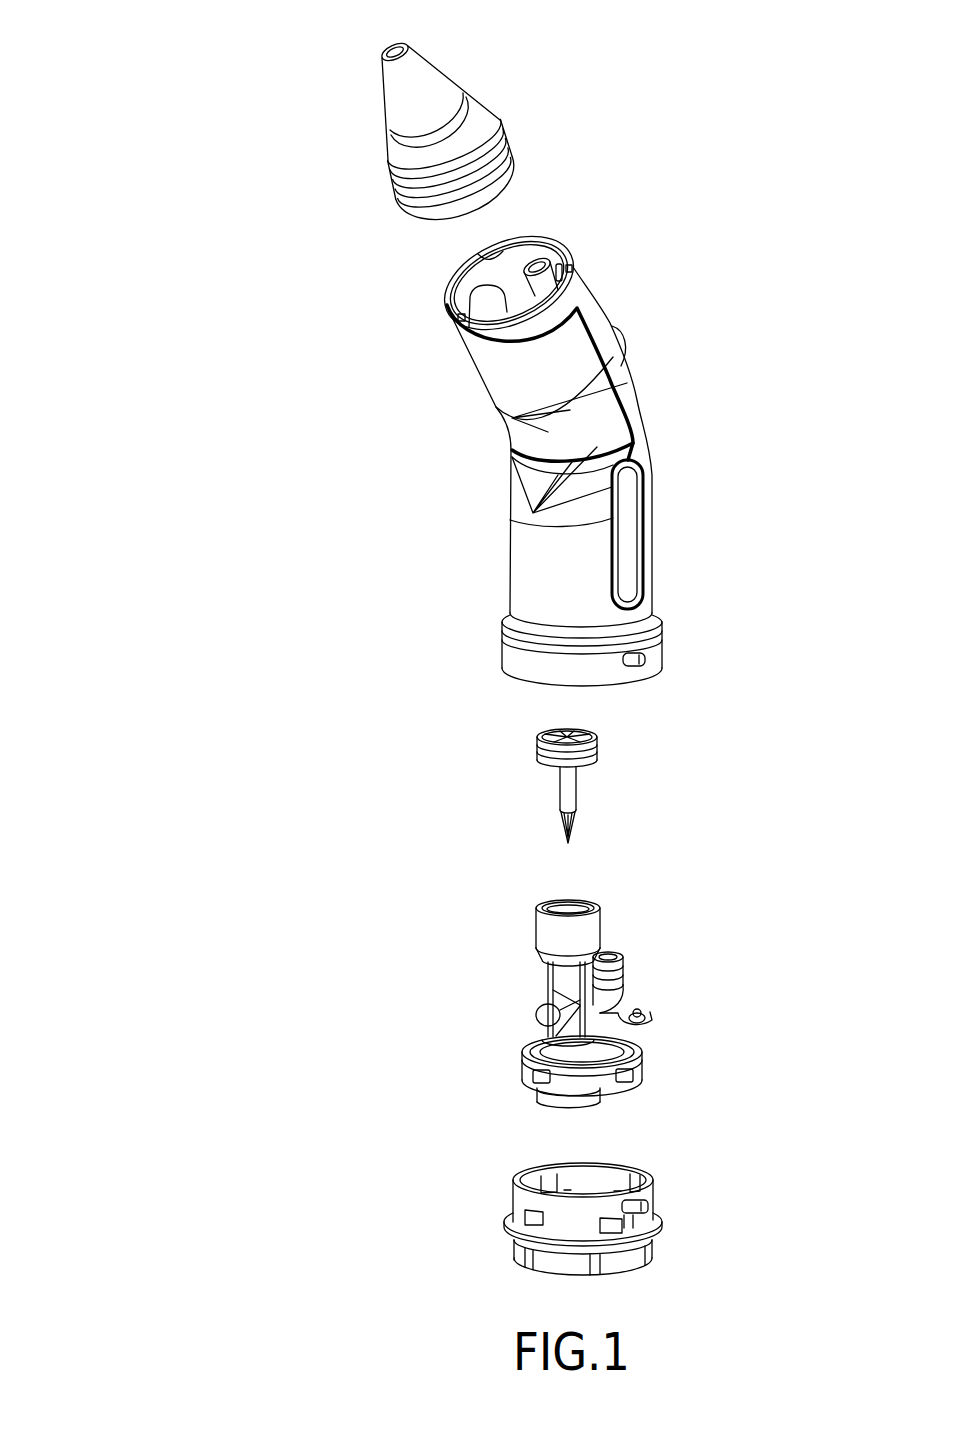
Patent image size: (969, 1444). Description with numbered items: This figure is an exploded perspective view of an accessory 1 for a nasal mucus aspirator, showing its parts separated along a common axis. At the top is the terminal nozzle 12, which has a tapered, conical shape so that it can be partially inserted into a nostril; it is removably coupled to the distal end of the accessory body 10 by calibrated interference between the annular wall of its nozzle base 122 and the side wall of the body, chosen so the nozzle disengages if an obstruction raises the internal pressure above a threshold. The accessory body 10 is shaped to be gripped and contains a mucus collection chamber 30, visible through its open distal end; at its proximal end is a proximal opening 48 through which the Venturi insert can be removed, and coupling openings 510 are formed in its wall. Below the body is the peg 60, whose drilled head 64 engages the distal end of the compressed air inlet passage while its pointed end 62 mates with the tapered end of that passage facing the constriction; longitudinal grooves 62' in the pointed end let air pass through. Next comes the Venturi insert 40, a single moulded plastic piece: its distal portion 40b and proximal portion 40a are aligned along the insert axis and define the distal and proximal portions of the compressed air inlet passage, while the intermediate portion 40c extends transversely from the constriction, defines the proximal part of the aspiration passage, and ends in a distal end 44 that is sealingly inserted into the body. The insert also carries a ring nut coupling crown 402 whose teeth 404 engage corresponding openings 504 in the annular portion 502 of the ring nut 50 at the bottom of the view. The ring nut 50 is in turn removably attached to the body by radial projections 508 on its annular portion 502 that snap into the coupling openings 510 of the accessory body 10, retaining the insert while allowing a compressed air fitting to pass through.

The accessory for a nasal mucus aspirator 1 is at (148, 150).
The terminal nozzle 12 is at (490, 82).
The nozzle base 122 is at (430, 208).
The accessory body 10 is at (462, 455).
The mucus collection chamber 30 is at (513, 276).
The proximal opening 48 is at (608, 702).
The coupling openings 510 is at (644, 658).
The peg 60 is at (503, 794).
The drilled head 64 is at (535, 742).
The pointed end 62 is at (577, 815).
The longitudinal grooves 62' is at (667, 825).
The Venturi insert 40 is at (433, 1005).
The distal portion of the Venturi insert 40b is at (542, 938).
The intermediate portion of the Venturi insert 40c is at (595, 1020).
The distal end of the intermediate portion 44 is at (622, 953).
The ring nut coupling crown 402 is at (647, 1058).
The teeth 404 is at (527, 1075).
The proximal portion of the Venturi insert 40a is at (543, 1092).
The ring nut 50 is at (482, 1251).
The annular portion 502 is at (658, 1198).
The openings 504 is at (520, 1220).
The radial projections 508 is at (657, 1207).